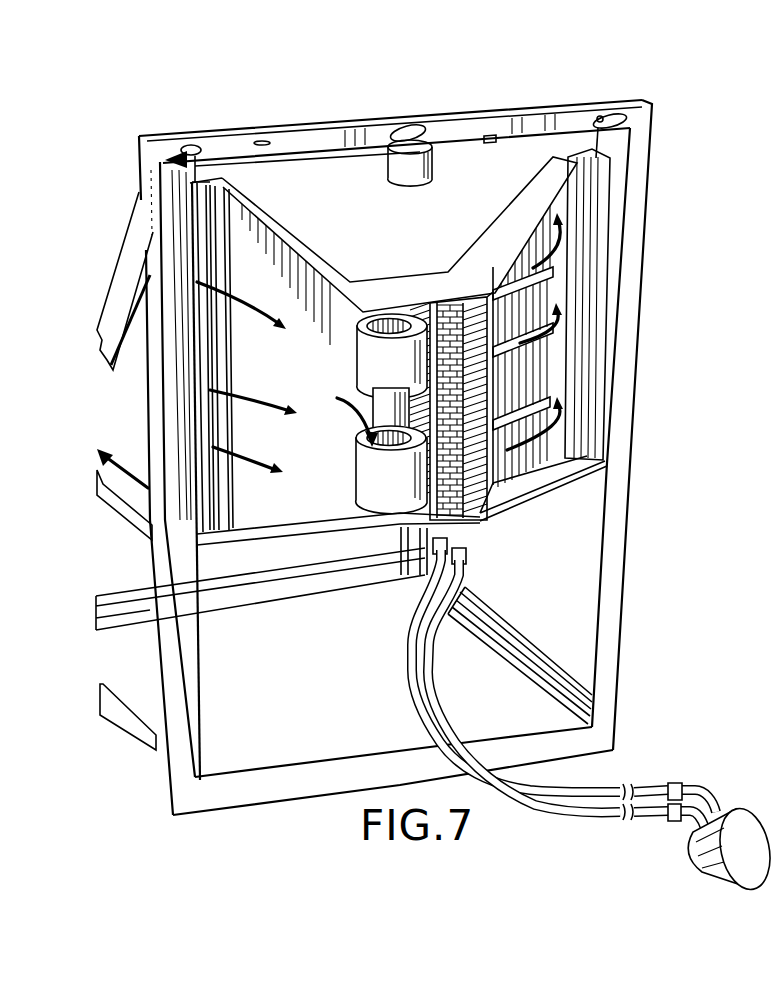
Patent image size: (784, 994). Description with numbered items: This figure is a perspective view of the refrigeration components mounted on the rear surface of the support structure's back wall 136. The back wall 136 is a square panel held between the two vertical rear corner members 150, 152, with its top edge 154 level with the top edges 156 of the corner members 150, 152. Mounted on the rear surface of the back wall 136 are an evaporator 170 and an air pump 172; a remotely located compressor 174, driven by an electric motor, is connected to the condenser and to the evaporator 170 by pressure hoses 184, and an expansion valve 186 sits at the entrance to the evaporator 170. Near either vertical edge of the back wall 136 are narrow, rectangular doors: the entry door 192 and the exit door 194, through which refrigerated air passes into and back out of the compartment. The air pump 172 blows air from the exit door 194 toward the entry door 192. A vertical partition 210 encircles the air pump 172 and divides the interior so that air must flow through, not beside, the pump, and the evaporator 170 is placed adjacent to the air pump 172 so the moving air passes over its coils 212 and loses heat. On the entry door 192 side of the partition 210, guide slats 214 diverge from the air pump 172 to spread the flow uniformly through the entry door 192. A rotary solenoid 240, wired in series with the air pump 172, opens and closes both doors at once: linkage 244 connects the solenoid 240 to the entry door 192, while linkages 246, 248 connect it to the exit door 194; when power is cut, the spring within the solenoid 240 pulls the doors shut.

The back wall 136 is at (550, 118).
The rear corner member 150 is at (647, 203).
The rear corner member 152 is at (142, 155).
The top edge of back wall 154 is at (447, 113).
The top edges of corner members 156 is at (168, 132).
The evaporator 170 is at (400, 543).
The air pump 172 is at (360, 360).
The compressor 174 is at (703, 860).
The pressure hoses 184 is at (443, 713).
The expansion valve 186 is at (472, 540).
The entry door 192 is at (600, 328).
The exit door 194 is at (200, 345).
The partition 210 is at (330, 264).
The coils 212 is at (505, 488).
The guide slats 214 is at (553, 268).
The rotary solenoid 240 is at (403, 187).
The linkage 244 is at (490, 143).
The linkage 246 is at (262, 143).
The linkage 248 is at (309, 163).